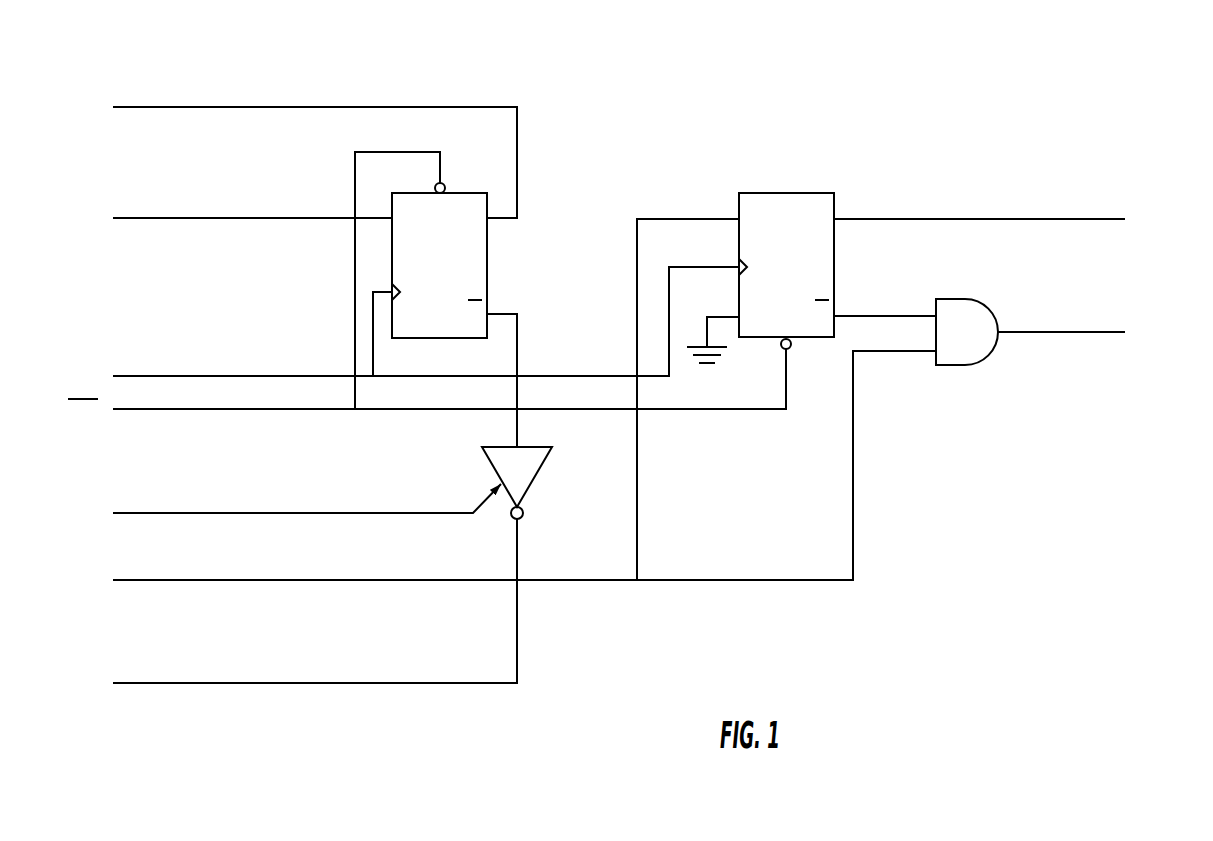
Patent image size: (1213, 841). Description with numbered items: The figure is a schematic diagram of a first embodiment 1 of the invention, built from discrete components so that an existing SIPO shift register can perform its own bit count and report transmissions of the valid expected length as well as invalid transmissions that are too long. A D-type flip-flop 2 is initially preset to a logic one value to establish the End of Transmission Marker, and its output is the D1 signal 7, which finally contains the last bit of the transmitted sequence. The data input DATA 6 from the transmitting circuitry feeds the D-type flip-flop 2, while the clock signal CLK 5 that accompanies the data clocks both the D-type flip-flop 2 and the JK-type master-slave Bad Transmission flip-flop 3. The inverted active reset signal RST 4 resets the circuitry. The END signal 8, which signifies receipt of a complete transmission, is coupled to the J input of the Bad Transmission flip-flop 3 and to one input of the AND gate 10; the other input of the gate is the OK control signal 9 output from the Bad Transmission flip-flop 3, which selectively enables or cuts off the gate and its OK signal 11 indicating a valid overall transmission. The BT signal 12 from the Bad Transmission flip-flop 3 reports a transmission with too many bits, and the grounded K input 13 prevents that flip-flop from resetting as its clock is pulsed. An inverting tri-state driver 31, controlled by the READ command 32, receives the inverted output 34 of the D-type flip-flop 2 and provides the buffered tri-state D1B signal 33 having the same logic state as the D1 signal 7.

The first embodiment 1 is at (667, 97).
The D-type flip-flop FF0 2 is at (489, 268).
The JK-type master-slave Bad Transmission flip-flop FFBT 3 is at (786, 191).
The inverted active reset signal RST 4 is at (260, 412).
The clock signal CLK 5 is at (262, 374).
The data input DATA 6 is at (280, 220).
The D1 signal 7 is at (262, 109).
The END signal 8 is at (265, 584).
The OK control signal 9 is at (871, 312).
The AND gate G1 10 is at (955, 297).
The OK signal 11 is at (1088, 324).
The Bad Transmission (BT) signal 12 is at (1090, 210).
The FFBT K input 13 is at (713, 304).
The tri-state driver 31 is at (545, 470).
The READ command 32 is at (263, 516).
The D1B signal 33 is at (268, 687).
The inverted output 34 is at (518, 355).